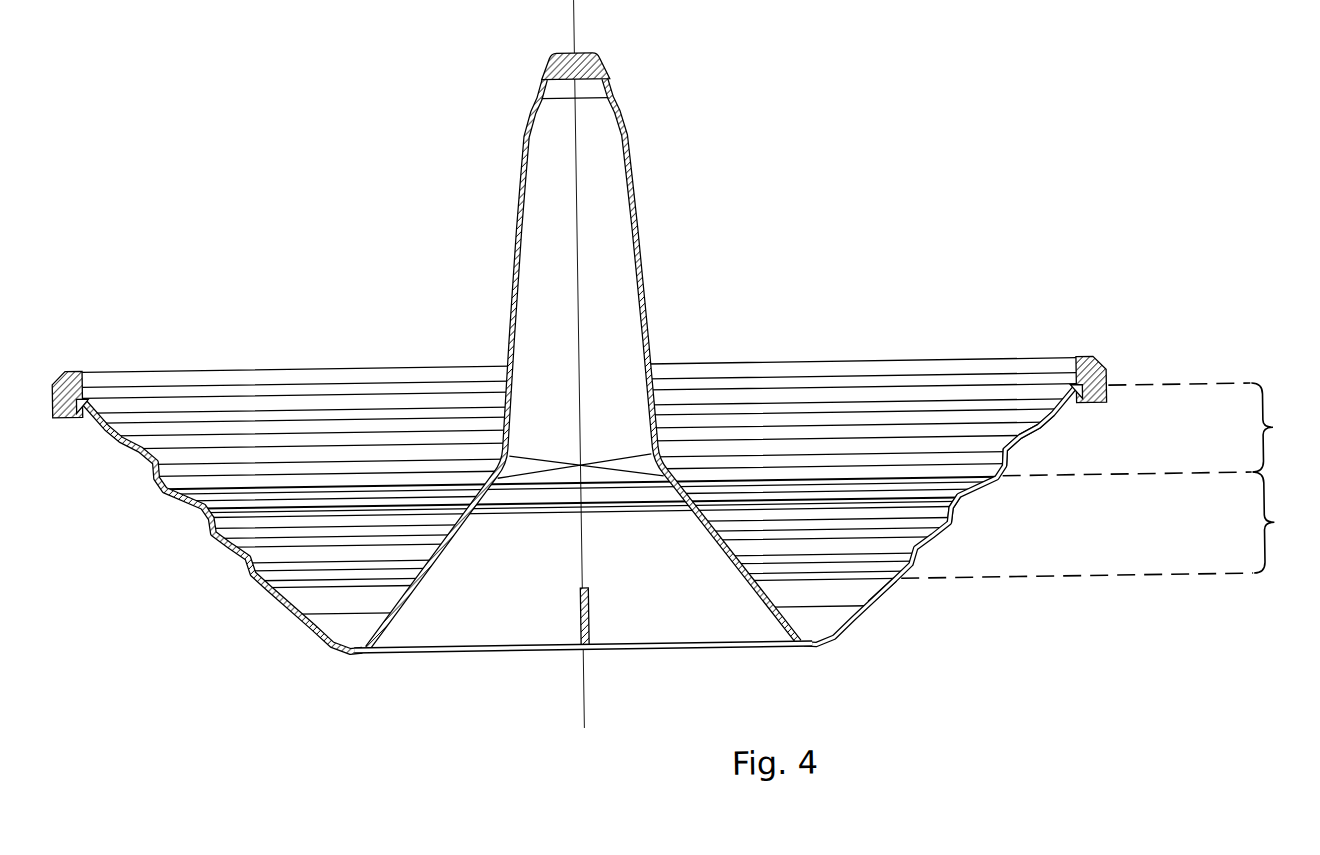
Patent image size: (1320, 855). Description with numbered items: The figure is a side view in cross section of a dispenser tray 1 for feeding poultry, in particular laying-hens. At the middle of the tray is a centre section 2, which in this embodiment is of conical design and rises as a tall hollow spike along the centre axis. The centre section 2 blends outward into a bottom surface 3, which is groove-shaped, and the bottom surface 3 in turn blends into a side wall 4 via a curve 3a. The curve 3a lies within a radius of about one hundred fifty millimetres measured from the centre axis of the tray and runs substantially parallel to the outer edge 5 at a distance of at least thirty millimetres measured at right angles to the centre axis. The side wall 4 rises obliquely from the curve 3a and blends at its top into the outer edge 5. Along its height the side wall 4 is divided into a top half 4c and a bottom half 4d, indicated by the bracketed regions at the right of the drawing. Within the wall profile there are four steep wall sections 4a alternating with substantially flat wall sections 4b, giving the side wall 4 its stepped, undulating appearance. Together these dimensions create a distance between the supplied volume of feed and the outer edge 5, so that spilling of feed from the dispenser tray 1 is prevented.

The dispenser tray 1 is at (1003, 343).
The centre section 2 is at (718, 612).
The bottom surface 3 is at (837, 644).
The curve 3a is at (878, 600).
The side wall 4 is at (958, 526).
The steep wall sections 4a is at (1006, 446).
The flat wall sections 4b is at (1034, 447).
The top half 4c is at (1152, 428).
The bottom half 4d is at (1103, 524).
The outer edge 5 is at (1107, 390).